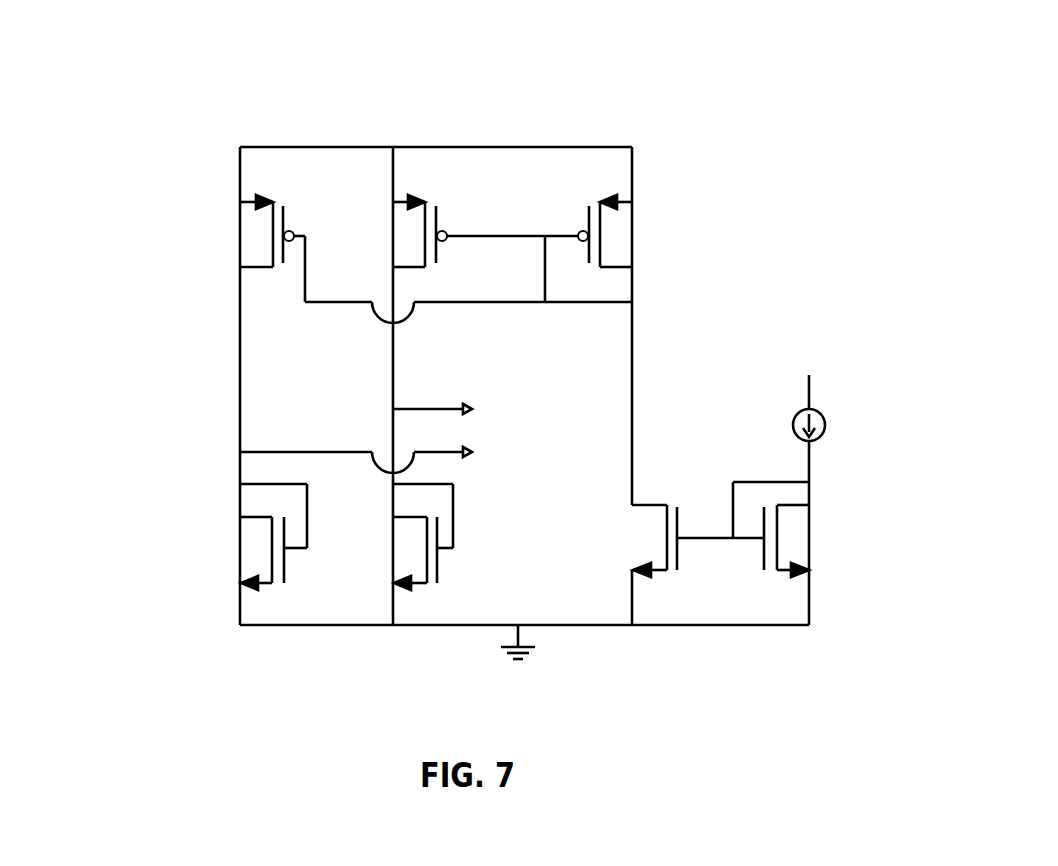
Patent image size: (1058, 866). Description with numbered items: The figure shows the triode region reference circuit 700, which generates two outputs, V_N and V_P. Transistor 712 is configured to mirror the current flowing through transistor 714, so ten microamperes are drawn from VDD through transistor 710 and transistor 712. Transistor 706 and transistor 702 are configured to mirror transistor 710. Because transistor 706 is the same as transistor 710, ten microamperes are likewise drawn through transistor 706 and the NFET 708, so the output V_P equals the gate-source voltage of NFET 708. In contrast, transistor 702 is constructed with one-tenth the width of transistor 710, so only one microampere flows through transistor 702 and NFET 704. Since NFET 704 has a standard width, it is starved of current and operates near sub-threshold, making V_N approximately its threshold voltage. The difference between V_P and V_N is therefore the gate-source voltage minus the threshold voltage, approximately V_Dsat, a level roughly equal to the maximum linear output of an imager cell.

The triode region reference circuit 700 is at (570, 329).
The transistor 702 is at (181, 242).
The NFET 704 is at (199, 537).
The transistor 706 is at (432, 233).
The NFET 708 is at (438, 537).
The transistor 710 is at (680, 240).
The transistor 712 is at (659, 543).
The transistor 714 is at (846, 544).